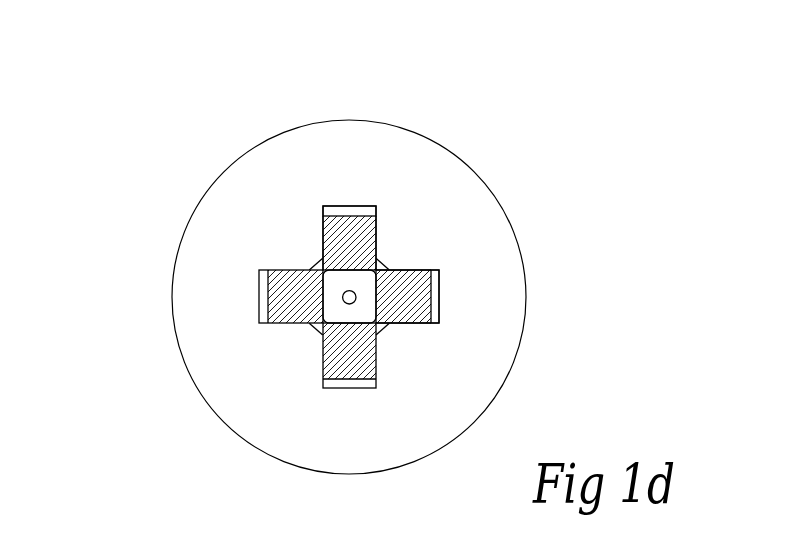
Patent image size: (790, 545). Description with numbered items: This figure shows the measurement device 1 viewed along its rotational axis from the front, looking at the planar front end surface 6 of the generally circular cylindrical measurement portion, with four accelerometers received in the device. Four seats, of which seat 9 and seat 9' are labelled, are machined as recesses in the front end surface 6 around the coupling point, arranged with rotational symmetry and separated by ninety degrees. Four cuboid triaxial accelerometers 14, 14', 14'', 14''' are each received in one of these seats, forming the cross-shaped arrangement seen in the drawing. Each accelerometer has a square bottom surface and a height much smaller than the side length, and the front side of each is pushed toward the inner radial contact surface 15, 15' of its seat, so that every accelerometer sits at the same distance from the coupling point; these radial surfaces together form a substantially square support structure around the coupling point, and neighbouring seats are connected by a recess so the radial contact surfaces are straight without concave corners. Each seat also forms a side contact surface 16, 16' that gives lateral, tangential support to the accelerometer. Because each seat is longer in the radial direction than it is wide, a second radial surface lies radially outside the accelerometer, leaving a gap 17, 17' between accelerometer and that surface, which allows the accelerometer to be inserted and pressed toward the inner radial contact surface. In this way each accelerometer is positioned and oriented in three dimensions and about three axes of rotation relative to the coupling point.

The measurement device 1 is at (157, 163).
The planar front end surface 6 is at (198, 248).
The seat 9 is at (251, 180).
The seat 9' is at (480, 215).
The triaxial accelerometer 14 is at (357, 159).
The triaxial accelerometer 14' is at (495, 287).
The triaxial accelerometer 14'' is at (285, 420).
The triaxial accelerometer 14''' is at (201, 331).
The inner radial contact surface 15 is at (395, 167).
The inner radial contact surface 15' is at (490, 278).
The side contact surface 16 is at (455, 190).
The side contact surface 16' is at (481, 368).
The gap 17 is at (372, 135).
The gap 17' is at (518, 316).